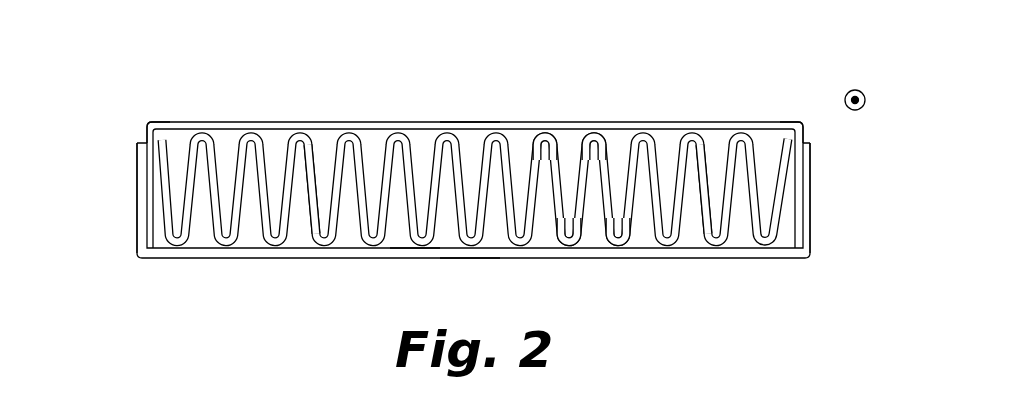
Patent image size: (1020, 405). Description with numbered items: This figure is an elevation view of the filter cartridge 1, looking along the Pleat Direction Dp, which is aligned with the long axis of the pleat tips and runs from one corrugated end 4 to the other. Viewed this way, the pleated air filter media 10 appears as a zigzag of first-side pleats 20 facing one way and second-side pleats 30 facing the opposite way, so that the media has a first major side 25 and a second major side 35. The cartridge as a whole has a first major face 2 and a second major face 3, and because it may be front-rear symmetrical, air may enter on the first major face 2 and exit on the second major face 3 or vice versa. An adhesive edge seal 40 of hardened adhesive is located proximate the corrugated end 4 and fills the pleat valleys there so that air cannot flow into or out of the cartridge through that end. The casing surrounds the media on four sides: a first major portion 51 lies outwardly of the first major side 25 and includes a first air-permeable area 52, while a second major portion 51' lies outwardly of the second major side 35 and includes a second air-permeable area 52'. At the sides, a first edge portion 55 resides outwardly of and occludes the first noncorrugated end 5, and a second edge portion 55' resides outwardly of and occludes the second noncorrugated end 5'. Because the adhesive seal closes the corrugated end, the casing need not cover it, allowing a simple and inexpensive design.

The filter cartridge 1 is at (778, 42).
The first major face/side 2 is at (411, 284).
The second major face/side 3 is at (650, 97).
The corrugated end/edge 4 is at (708, 220).
The first noncorrugated end/edge 5 is at (134, 130).
The second noncorrugated end/edge 5' is at (819, 132).
The pleated air filter media 10 is at (390, 140).
The first-side pleat 20 is at (618, 240).
The first major side of pleated filter media 25 is at (570, 245).
The second-side pleat 30 is at (593, 140).
The second major side of pleated filter media 35 is at (545, 135).
The first adhesive edge seal 40 is at (323, 140).
The first major portion of casing 51 is at (473, 240).
The second major portion of casing 51' is at (474, 144).
The first air-permeable area 52 is at (470, 290).
The second air-permeable area 52' is at (473, 88).
The first edge portion of casing 55 is at (107, 198).
The second edge portion of casing 55' is at (841, 198).
The Pleat Direction Dp is at (855, 90).